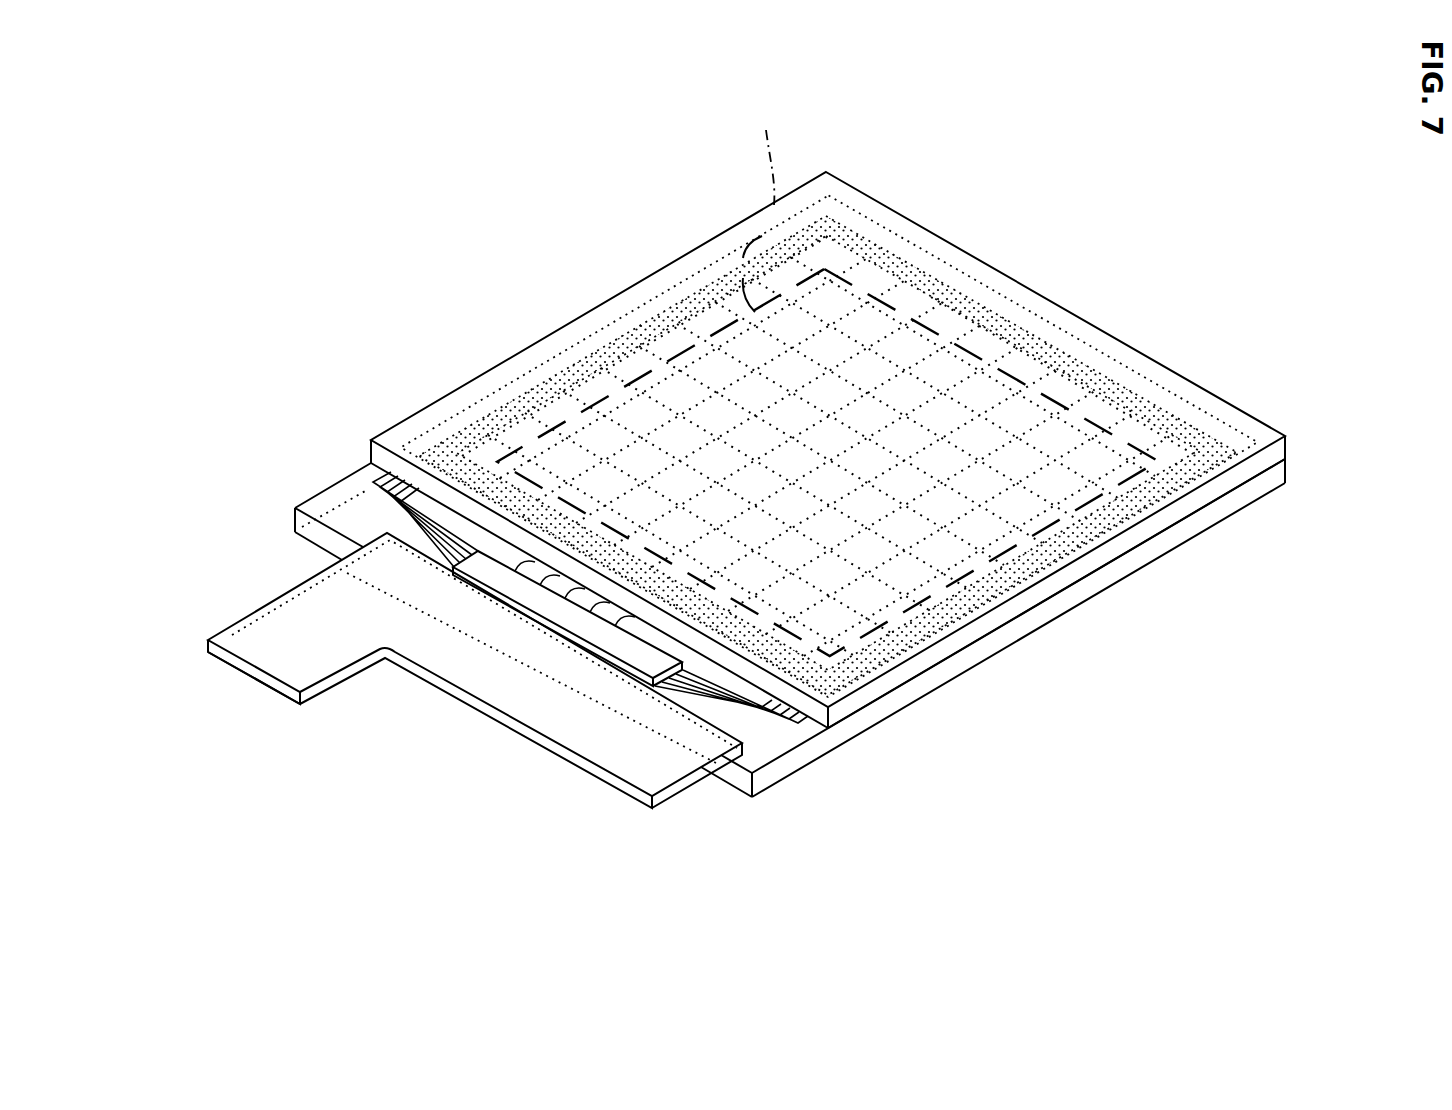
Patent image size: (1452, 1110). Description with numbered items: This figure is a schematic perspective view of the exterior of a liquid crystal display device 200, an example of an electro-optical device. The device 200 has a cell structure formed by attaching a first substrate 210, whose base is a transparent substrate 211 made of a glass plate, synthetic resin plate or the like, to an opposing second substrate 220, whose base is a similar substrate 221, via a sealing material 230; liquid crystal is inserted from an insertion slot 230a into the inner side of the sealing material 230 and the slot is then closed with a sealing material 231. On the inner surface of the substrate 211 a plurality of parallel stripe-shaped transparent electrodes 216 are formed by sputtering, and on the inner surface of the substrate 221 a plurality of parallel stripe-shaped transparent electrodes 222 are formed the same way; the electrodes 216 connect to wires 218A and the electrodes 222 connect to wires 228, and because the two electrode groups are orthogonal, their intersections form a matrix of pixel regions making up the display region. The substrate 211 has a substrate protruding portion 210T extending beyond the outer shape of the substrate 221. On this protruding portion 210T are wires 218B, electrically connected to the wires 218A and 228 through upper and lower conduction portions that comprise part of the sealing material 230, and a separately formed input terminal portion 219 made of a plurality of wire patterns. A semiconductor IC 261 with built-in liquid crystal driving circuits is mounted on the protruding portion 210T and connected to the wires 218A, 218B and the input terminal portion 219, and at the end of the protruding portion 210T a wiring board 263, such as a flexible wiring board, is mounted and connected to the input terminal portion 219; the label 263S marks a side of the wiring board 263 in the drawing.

The liquid crystal display device 200 is at (1200, 176).
The first substrate 210 is at (688, 628).
The substrate protruding portion 210T is at (342, 515).
The transparent substrate 211 is at (955, 680).
The transparent electrodes 216 is at (707, 300).
The wires 218A is at (460, 500).
The wires 218B is at (373, 480).
The input terminal portion 219 is at (522, 470).
The second substrate 220 is at (872, 411).
The substrate 221 is at (880, 203).
The transparent electrodes 222 is at (1130, 343).
The wires 228 is at (1020, 590).
The sealing material 230 is at (633, 302).
The insertion slot 230a is at (1050, 290).
The sealing material 231 is at (1080, 307).
The semiconductor IC 261 is at (486, 560).
The wiring board 263 is at (424, 670).
The flexible printed circuit side 263S is at (262, 682).